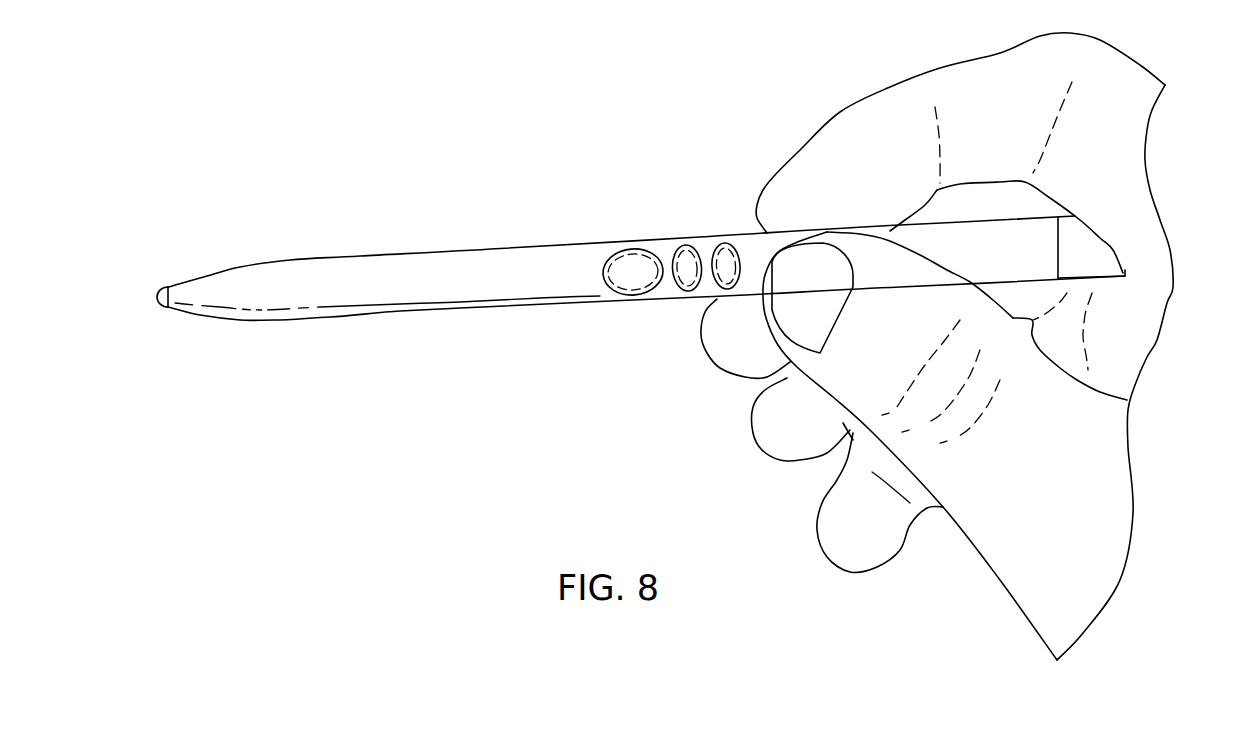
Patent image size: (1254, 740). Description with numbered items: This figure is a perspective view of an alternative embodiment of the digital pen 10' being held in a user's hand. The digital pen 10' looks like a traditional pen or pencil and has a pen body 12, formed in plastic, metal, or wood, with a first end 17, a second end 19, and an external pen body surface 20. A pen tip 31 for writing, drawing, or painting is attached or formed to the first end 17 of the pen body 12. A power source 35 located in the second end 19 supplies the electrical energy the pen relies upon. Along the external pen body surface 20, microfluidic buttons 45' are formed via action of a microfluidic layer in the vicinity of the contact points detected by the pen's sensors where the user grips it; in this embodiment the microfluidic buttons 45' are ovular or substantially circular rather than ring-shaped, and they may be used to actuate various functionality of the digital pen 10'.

The digital pen 10' is at (639, 196).
The pen body 12 is at (467, 309).
The first end 17 is at (143, 270).
The second end 19 is at (1130, 293).
The external pen body surface 20 is at (478, 228).
The pen tip 31 is at (156, 300).
The power source 35 is at (1110, 250).
The microfluidic buttons 45' is at (671, 219).